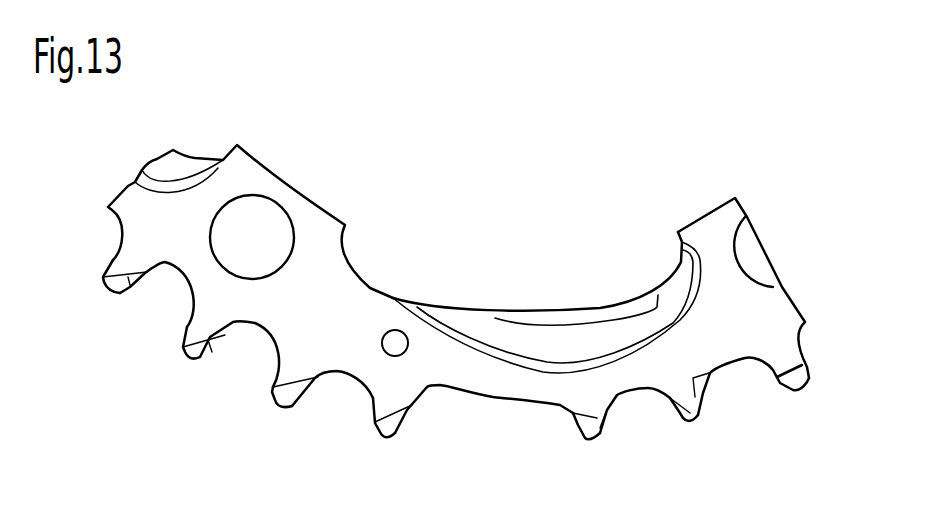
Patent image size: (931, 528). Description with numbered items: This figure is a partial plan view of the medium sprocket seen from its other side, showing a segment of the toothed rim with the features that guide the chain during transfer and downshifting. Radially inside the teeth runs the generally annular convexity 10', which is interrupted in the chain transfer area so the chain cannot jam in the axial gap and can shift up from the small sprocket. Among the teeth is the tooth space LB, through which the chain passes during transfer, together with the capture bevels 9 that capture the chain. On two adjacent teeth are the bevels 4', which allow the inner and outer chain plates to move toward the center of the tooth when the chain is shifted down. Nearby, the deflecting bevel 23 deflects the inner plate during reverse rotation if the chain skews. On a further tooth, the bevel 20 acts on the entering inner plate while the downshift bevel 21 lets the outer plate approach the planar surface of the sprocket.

The convexity 10' is at (547, 302).
The bevels 4' is at (169, 354).
The deflecting bevel 23 is at (288, 397).
The tooth space LB is at (488, 403).
The capture bevels 9 is at (588, 430).
The bevel 20 is at (610, 423).
The downshift bevel 21 is at (707, 397).